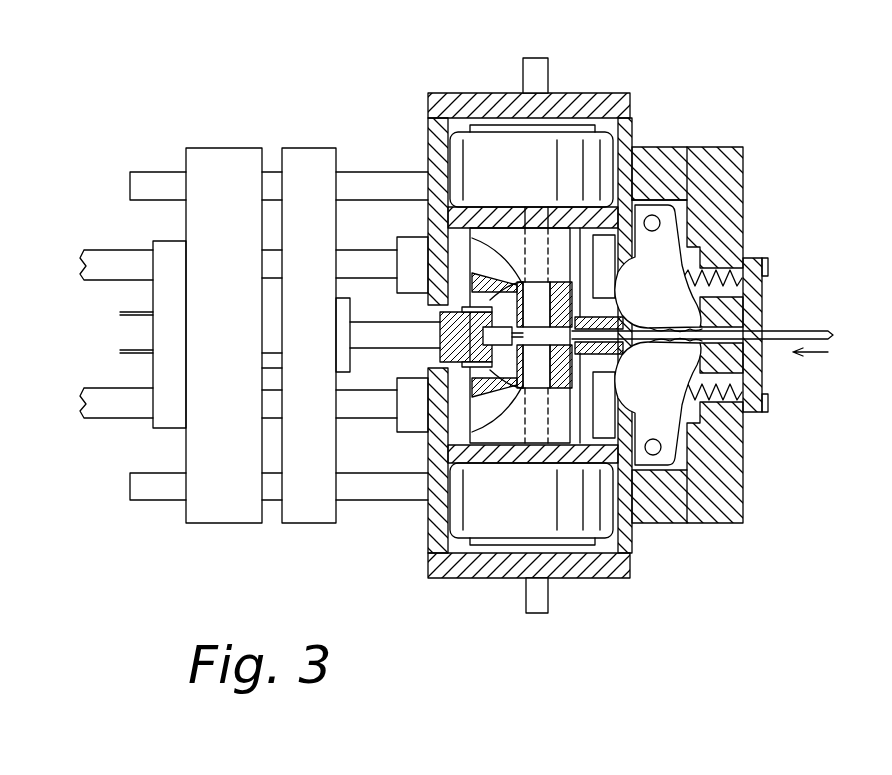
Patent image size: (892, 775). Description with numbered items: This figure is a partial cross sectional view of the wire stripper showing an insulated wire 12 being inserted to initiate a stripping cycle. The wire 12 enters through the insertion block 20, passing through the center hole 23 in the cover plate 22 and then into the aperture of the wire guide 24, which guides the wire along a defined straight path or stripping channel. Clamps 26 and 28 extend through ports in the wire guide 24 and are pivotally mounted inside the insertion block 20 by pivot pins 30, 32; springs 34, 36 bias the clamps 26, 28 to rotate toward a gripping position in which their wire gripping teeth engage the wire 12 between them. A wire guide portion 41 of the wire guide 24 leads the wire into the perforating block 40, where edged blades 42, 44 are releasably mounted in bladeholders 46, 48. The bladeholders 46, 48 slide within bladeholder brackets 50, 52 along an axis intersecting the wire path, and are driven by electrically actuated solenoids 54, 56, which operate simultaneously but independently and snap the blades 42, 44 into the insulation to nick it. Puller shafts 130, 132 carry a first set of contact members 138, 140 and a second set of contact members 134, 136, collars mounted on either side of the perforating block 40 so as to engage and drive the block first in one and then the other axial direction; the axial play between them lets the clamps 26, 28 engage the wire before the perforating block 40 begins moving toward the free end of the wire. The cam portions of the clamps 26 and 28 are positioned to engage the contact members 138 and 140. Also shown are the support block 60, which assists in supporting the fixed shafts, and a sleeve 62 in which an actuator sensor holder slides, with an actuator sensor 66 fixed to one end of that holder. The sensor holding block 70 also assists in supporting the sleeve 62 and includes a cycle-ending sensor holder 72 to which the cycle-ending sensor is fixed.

The insulated wire 12 is at (790, 330).
The insertion block 20 is at (702, 158).
The cover plate 22 is at (745, 295).
The center hole 23 is at (755, 372).
The wire guide 24 is at (745, 318).
The clamp 26 is at (688, 150).
The clamp 28 is at (712, 515).
The pivot pin 30 is at (652, 215).
The pivot pin 32 is at (655, 467).
The spring 34 is at (713, 262).
The spring 36 is at (745, 430).
The perforating block 40 is at (568, 100).
The wire guide portion 41 is at (595, 535).
The blade 42 is at (505, 275).
The blade 44 is at (470, 432).
The bladeholder 46 is at (530, 240).
The bladeholder 48 is at (533, 385).
The bladeholder bracket 50 is at (537, 152).
The bladeholder bracket 52 is at (485, 540).
The solenoid 54 is at (540, 228).
The solenoid 56 is at (520, 580).
The support block 60 is at (285, 153).
The sleeve 62 is at (272, 313).
The actuator sensor 66 is at (410, 252).
The sensor holding block 70 is at (225, 153).
The cycle-ending sensor holder 72 is at (168, 247).
The puller shaft 130 is at (368, 272).
The puller shaft 132 is at (360, 408).
The contact member 134 is at (400, 240).
The contact member 136 is at (408, 427).
The contact member 138 is at (603, 243).
The contact member 140 is at (607, 440).